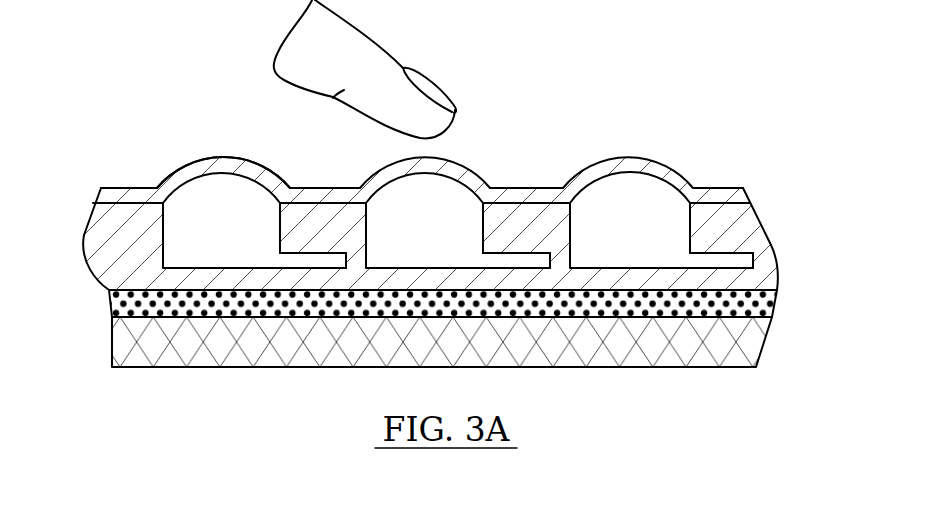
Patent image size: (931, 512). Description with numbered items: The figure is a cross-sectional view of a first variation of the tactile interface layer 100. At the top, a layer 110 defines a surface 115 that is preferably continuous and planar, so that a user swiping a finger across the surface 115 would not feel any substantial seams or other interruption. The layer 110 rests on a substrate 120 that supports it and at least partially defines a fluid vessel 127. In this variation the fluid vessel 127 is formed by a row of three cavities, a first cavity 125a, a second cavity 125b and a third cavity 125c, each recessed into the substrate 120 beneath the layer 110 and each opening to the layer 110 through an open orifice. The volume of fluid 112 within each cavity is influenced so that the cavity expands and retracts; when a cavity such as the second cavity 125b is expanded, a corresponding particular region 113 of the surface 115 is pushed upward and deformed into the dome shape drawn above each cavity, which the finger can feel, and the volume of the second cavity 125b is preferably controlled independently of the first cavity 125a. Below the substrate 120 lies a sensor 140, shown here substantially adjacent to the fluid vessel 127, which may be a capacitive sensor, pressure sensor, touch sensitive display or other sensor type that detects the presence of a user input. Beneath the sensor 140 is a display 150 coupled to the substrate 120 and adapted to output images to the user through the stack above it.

The tactile interface layer 100 is at (440, 250).
The layer 110 is at (721, 187).
The fluid 112 is at (238, 195).
The particular region 113 is at (590, 161).
The surface 115 is at (141, 187).
The substrate 120 is at (740, 230).
The first cavity 125a is at (254, 220).
The second cavity 125b is at (458, 220).
The third cavity 125c is at (661, 220).
The fluid vessel 127 is at (477, 253).
The sensor 140 is at (113, 303).
The display 150 is at (123, 337).